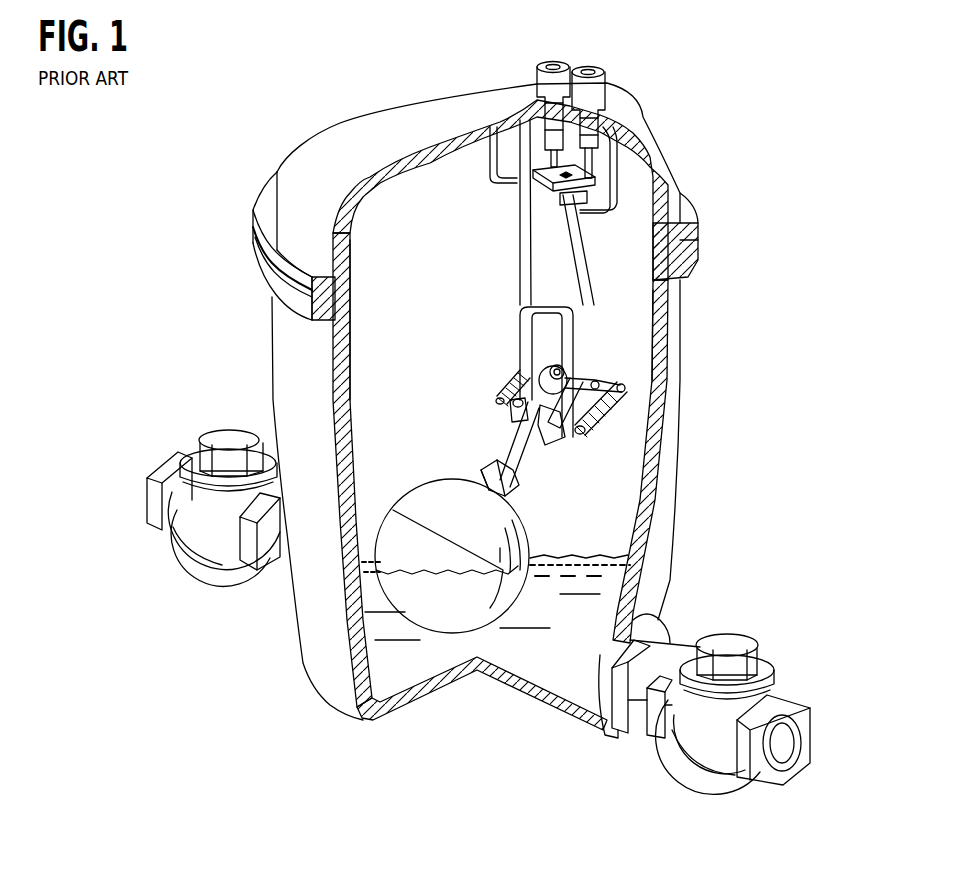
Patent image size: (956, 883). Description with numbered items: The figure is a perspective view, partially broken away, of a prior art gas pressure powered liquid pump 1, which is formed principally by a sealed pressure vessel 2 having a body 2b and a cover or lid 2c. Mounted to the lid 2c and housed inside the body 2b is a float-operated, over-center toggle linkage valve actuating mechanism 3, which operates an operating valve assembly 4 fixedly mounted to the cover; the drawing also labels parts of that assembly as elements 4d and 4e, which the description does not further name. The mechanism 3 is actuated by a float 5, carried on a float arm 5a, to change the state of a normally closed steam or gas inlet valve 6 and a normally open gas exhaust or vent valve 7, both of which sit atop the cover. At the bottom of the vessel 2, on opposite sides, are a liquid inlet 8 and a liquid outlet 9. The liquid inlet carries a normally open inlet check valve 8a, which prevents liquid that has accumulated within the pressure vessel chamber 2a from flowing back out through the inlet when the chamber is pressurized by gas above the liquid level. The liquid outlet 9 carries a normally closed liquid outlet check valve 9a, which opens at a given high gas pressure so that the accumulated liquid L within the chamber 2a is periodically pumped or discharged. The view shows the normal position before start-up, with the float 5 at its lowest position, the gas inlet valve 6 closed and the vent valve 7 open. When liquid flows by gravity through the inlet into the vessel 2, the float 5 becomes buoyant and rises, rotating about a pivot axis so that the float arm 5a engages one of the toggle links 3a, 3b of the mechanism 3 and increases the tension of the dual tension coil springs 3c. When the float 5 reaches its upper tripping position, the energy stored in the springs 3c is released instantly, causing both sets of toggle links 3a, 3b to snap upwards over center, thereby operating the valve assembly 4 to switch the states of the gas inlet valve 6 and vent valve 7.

The gas pressure powered liquid pump 1 is at (768, 236).
The pressure vessel 2 is at (698, 460).
The pressure vessel chamber 2a is at (588, 506).
The body 2b is at (660, 562).
The cover or lid 2c is at (410, 118).
The over-center toggle linkage valve actuating mechanism 3 is at (462, 377).
The toggle link 3a is at (560, 433).
The toggle link 3b is at (510, 417).
The tension coil springs 3c is at (512, 382).
The operating valve assembly 4 is at (586, 220).
The electrode rod 4d is at (596, 285).
The insulating plate 4e is at (540, 177).
The float 5 is at (490, 608).
The float arm 5a is at (520, 450).
The gas inlet valve 6 is at (535, 56).
The gas exhaust or vent valve 7 is at (606, 66).
The liquid inlet 8 is at (812, 746).
The inlet check valve 8a is at (700, 742).
The liquid outlet 9 is at (148, 506).
The liquid outlet check valve 9a is at (213, 548).
The accumulated liquid L is at (578, 556).